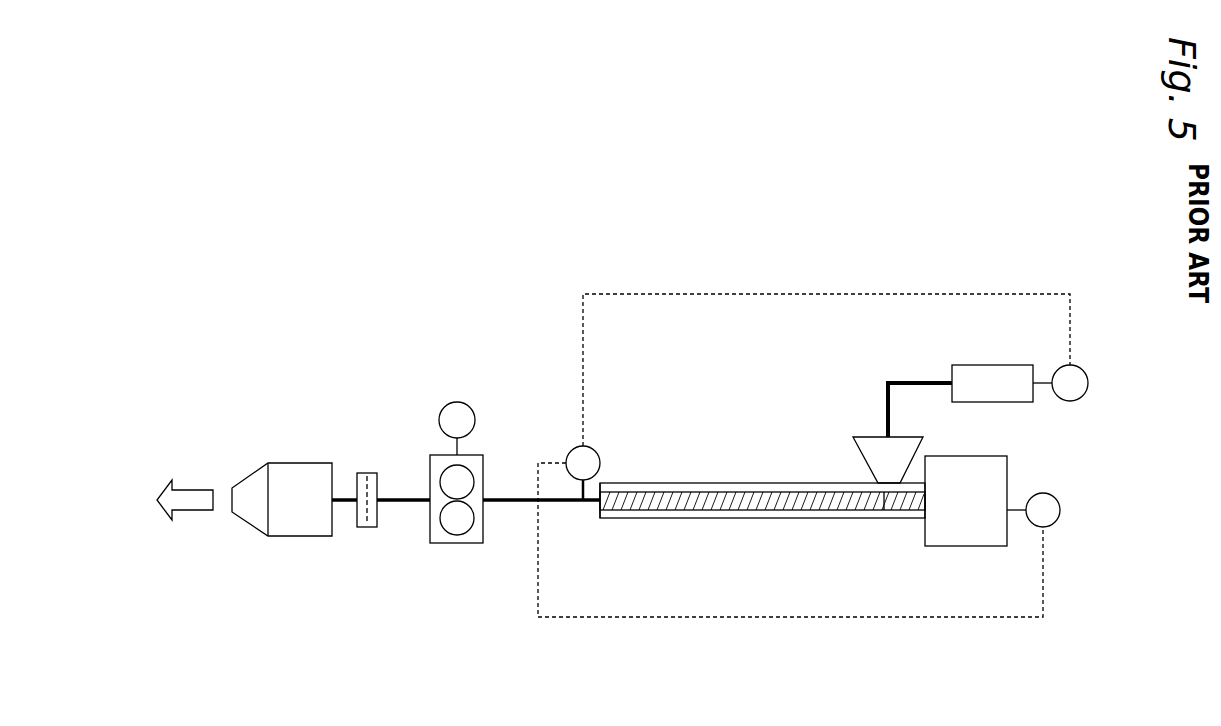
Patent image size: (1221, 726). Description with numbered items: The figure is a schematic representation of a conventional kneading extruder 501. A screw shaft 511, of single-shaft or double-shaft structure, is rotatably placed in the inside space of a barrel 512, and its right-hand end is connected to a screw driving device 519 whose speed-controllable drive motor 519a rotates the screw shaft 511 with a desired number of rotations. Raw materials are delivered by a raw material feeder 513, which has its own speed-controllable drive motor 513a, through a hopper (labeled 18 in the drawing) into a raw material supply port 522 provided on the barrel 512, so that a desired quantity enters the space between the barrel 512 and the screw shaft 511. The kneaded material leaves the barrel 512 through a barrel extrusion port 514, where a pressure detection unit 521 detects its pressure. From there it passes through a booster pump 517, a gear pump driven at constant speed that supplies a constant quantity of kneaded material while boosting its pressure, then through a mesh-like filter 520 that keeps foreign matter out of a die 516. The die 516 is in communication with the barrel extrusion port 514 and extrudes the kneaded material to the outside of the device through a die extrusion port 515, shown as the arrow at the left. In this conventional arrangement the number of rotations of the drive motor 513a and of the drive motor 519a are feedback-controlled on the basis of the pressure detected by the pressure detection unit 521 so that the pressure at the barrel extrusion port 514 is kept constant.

The conventional kneading extruder 501 is at (1073, 258).
The screw shaft 511 is at (720, 512).
The barrel 512 is at (655, 520).
The raw material feeder 513 is at (997, 365).
The drive motor 513a is at (1072, 402).
The barrel extrusion port 514 is at (598, 510).
The die extrusion port 515 is at (232, 496).
The die 516 is at (302, 462).
The booster pump 517 is at (455, 545).
The hopper 18 is at (862, 435).
The screw driving device 519 is at (966, 548).
The drive motor 519a is at (1042, 492).
The mesh-like filter 520 is at (367, 472).
The pressure detection unit 521 is at (600, 466).
The raw material supply port 522 is at (885, 495).